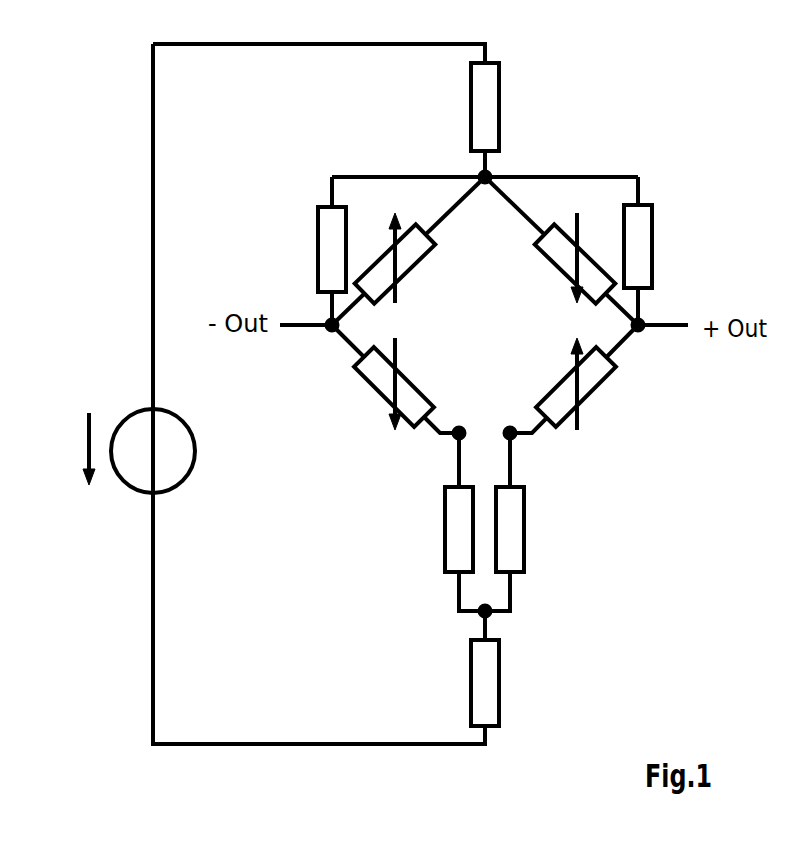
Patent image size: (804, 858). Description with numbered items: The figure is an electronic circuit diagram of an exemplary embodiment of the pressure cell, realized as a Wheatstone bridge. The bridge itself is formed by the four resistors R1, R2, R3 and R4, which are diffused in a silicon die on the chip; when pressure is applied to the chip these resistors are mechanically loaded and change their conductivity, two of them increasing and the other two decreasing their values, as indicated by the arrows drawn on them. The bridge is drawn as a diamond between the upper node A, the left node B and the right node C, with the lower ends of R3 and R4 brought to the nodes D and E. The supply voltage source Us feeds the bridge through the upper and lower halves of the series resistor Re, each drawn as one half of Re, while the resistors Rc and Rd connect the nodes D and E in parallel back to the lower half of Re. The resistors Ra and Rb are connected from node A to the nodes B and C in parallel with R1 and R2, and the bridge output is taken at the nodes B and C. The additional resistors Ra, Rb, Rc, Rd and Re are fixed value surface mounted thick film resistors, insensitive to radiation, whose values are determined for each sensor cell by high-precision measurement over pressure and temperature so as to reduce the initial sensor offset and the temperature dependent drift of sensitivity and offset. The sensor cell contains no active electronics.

The series resistor Re is at (441, 394).
The additional resistor Ra is at (314, 251).
The additional resistor Rb is at (659, 251).
The additional resistor Rc is at (445, 522).
The additional resistor Rd is at (526, 522).
The bridge resistor R1 is at (408, 251).
The bridge resistor R2 is at (561, 251).
The bridge resistor R3 is at (395, 379).
The bridge resistor R4 is at (574, 379).
The supply voltage source Us is at (118, 451).
The bridge node A is at (485, 194).
The bridge node B (- Out) B is at (330, 342).
The bridge node C (+ Out) C is at (643, 338).
The node D is at (461, 417).
The node E is at (508, 417).